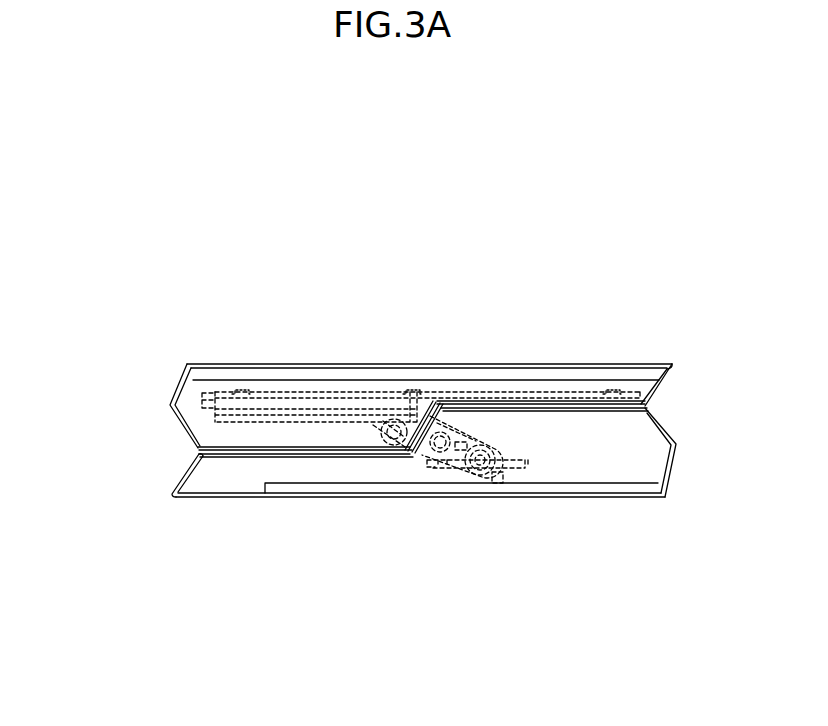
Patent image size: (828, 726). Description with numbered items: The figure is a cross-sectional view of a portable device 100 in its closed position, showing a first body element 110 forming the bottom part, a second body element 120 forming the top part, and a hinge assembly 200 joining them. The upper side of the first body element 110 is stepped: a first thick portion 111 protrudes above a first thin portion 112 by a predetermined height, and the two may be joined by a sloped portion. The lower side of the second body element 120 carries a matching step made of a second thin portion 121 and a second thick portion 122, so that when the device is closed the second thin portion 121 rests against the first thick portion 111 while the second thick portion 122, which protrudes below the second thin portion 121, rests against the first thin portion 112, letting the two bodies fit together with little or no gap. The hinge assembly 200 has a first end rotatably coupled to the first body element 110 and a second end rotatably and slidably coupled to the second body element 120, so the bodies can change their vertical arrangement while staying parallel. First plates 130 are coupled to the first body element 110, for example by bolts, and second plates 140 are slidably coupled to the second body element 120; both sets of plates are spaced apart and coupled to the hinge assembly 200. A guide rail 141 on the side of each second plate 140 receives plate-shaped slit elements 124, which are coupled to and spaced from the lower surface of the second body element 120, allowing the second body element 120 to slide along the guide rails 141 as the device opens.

The portable device 100 is at (128, 336).
The first body element 110 is at (541, 509).
The first thick portion 111 is at (615, 423).
The first thin portion 112 is at (233, 475).
The second body element 120 is at (303, 352).
The second thin portion 121 is at (647, 383).
The second thick portion 122 is at (233, 436).
The slit elements 124 is at (598, 395).
The first plates 130 is at (437, 458).
The second plates 140 is at (217, 417).
The guide rail 141 is at (230, 403).
The hinge assembly 200 is at (477, 420).